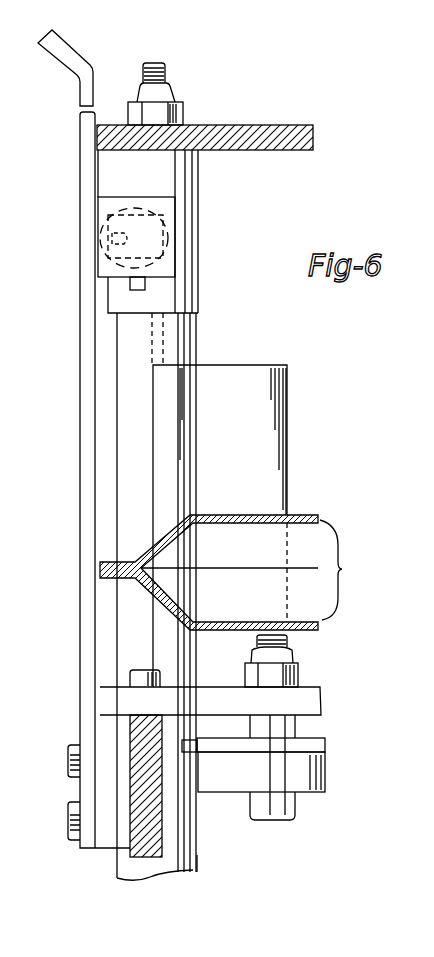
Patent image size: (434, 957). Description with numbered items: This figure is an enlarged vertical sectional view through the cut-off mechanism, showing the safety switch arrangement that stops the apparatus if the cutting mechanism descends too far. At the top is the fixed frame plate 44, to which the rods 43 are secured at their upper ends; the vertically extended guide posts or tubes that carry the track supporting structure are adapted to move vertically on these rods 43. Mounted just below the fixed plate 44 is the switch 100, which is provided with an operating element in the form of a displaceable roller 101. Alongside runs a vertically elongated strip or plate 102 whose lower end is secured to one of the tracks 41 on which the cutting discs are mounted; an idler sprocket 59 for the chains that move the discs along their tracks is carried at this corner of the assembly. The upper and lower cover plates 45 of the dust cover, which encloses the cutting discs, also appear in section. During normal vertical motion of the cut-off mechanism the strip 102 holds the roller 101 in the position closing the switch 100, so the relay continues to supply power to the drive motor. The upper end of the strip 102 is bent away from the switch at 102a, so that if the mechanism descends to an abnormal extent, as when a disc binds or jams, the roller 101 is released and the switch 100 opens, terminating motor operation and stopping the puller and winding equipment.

The track plate 41 is at (150, 852).
The rod 43 is at (167, 75).
The frame plate 44 is at (293, 124).
The cover plate 45 is at (233, 572).
The idler sprocket 59 is at (327, 782).
The switch 100 is at (172, 250).
The displaceable roller 101 is at (148, 230).
The actuator strip 102 is at (80, 330).
The bent upper end 102a is at (85, 62).